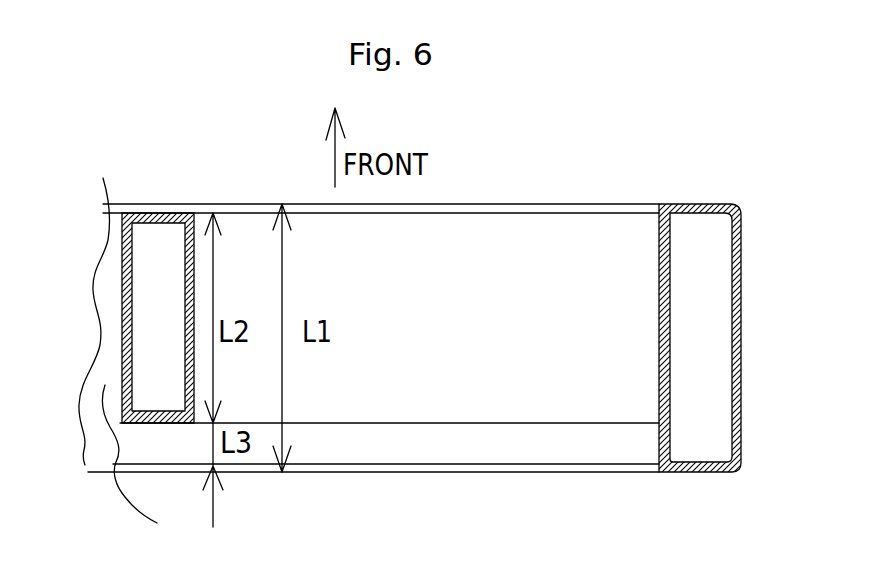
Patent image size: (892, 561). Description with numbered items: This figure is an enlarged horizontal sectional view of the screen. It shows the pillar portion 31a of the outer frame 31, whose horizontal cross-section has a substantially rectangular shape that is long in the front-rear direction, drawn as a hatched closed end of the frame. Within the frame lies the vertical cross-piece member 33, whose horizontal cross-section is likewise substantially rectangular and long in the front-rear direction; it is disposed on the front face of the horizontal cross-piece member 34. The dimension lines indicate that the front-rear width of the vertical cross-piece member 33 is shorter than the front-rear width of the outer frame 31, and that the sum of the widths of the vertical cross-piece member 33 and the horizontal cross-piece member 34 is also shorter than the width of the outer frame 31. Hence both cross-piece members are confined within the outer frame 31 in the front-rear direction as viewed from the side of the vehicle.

The outer frame 31 is at (547, 203).
The pillar portion 31a is at (740, 380).
The vertical cross-piece member 33 is at (122, 335).
The horizontal cross-piece member 34 is at (458, 442).